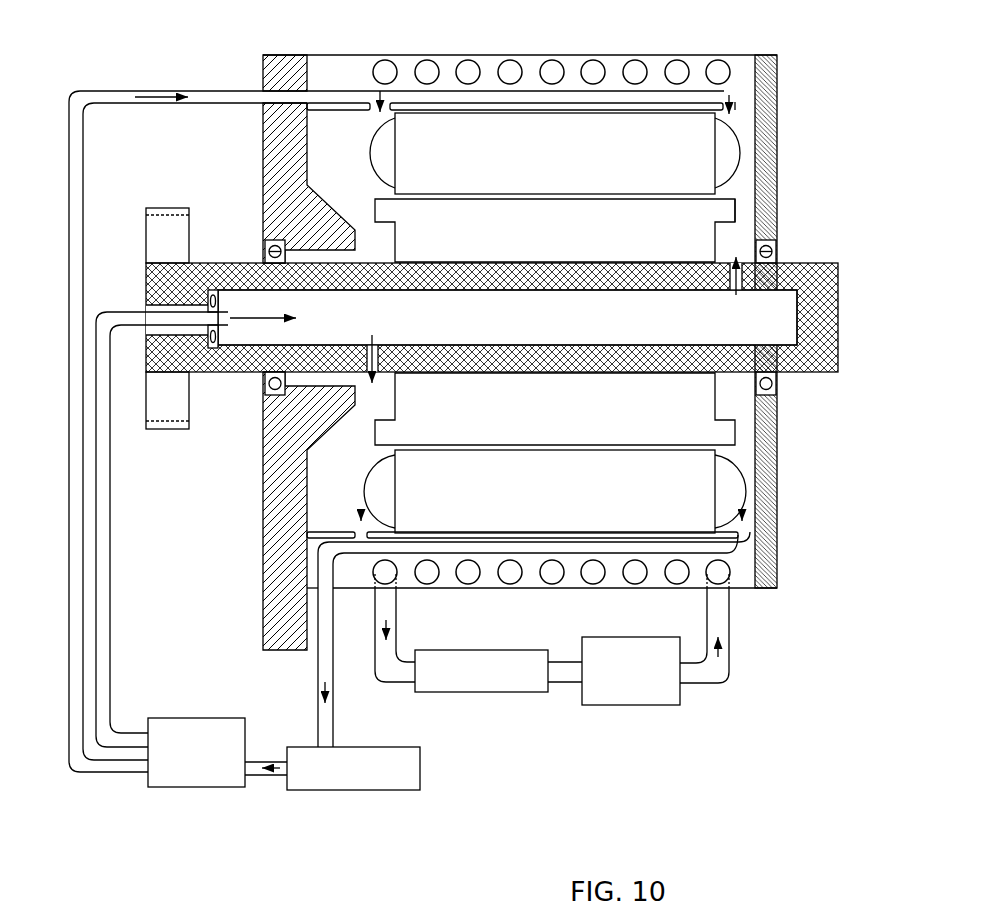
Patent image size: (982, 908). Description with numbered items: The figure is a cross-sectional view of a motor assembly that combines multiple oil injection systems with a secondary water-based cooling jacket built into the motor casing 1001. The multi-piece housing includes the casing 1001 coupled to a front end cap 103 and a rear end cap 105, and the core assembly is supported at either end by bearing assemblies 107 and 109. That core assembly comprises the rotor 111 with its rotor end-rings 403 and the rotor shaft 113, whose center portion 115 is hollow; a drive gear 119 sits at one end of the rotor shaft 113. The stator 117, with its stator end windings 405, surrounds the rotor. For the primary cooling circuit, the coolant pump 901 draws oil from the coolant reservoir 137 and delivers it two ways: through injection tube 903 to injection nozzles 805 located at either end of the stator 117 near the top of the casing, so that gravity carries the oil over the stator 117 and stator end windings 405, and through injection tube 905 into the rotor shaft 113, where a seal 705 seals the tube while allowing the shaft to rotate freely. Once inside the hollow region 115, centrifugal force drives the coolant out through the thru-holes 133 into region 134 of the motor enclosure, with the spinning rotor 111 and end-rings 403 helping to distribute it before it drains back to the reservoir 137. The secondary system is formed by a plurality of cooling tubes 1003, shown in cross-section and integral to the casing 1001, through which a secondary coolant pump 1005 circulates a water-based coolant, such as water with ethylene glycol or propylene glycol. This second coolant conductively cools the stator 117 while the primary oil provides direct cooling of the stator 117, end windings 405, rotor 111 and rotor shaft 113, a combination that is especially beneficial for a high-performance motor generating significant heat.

The motor casing 1001 is at (516, 56).
The cooling tubes 1003 is at (635, 584).
The secondary coolant pump 1005 is at (612, 706).
The injection nozzles 805 is at (362, 121).
The rear end cap 105 is at (758, 125).
The stator end windings 405 is at (738, 155).
The rotor end-rings 403 is at (738, 210).
The bearing assembly 109 is at (777, 253).
The bearing assembly 107 is at (269, 252).
The thru-holes 133 is at (752, 275).
The front end cap 103 is at (281, 171).
The drive gear 119 is at (158, 236).
The region of the motor enclosure 134 is at (363, 192).
The stator 117 is at (551, 164).
The rotor 111 is at (551, 236).
The hollow center portion 115 is at (551, 329).
The rotor shaft 113 is at (810, 355).
The seal 705 is at (213, 350).
The injection tube 905 is at (110, 600).
The injection tube 903 is at (80, 771).
The coolant pump 901 is at (202, 788).
The coolant reservoir 137 is at (340, 791).